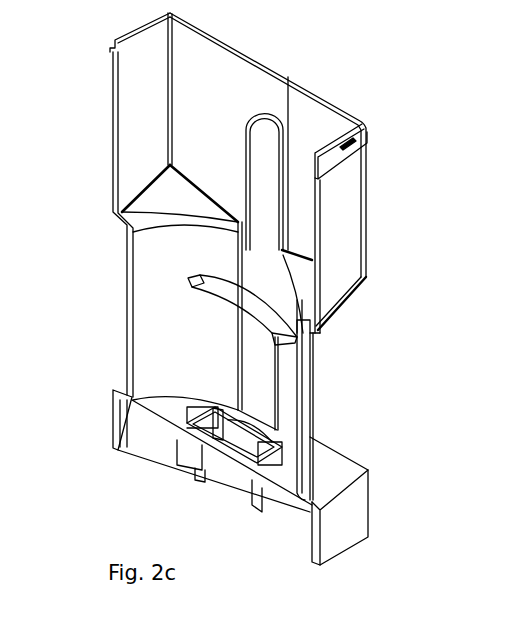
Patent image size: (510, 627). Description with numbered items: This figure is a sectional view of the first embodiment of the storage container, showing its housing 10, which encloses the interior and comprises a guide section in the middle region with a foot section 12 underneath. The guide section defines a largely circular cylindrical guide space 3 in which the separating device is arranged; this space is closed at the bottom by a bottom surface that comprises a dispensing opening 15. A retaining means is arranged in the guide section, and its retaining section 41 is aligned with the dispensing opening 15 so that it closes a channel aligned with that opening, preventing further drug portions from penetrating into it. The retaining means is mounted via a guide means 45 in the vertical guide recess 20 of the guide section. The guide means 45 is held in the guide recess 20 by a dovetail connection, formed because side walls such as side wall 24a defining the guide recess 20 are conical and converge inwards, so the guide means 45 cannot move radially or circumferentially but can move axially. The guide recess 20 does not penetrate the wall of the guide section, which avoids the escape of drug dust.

The housing 10 is at (135, 125).
The guide space 3 is at (168, 250).
The side wall 24a is at (217, 328).
The guide recess 20 is at (230, 397).
The dispensing opening 15 is at (243, 443).
The foot section 12 is at (348, 523).
The retaining section 41 is at (260, 307).
The guide means 45 is at (263, 190).